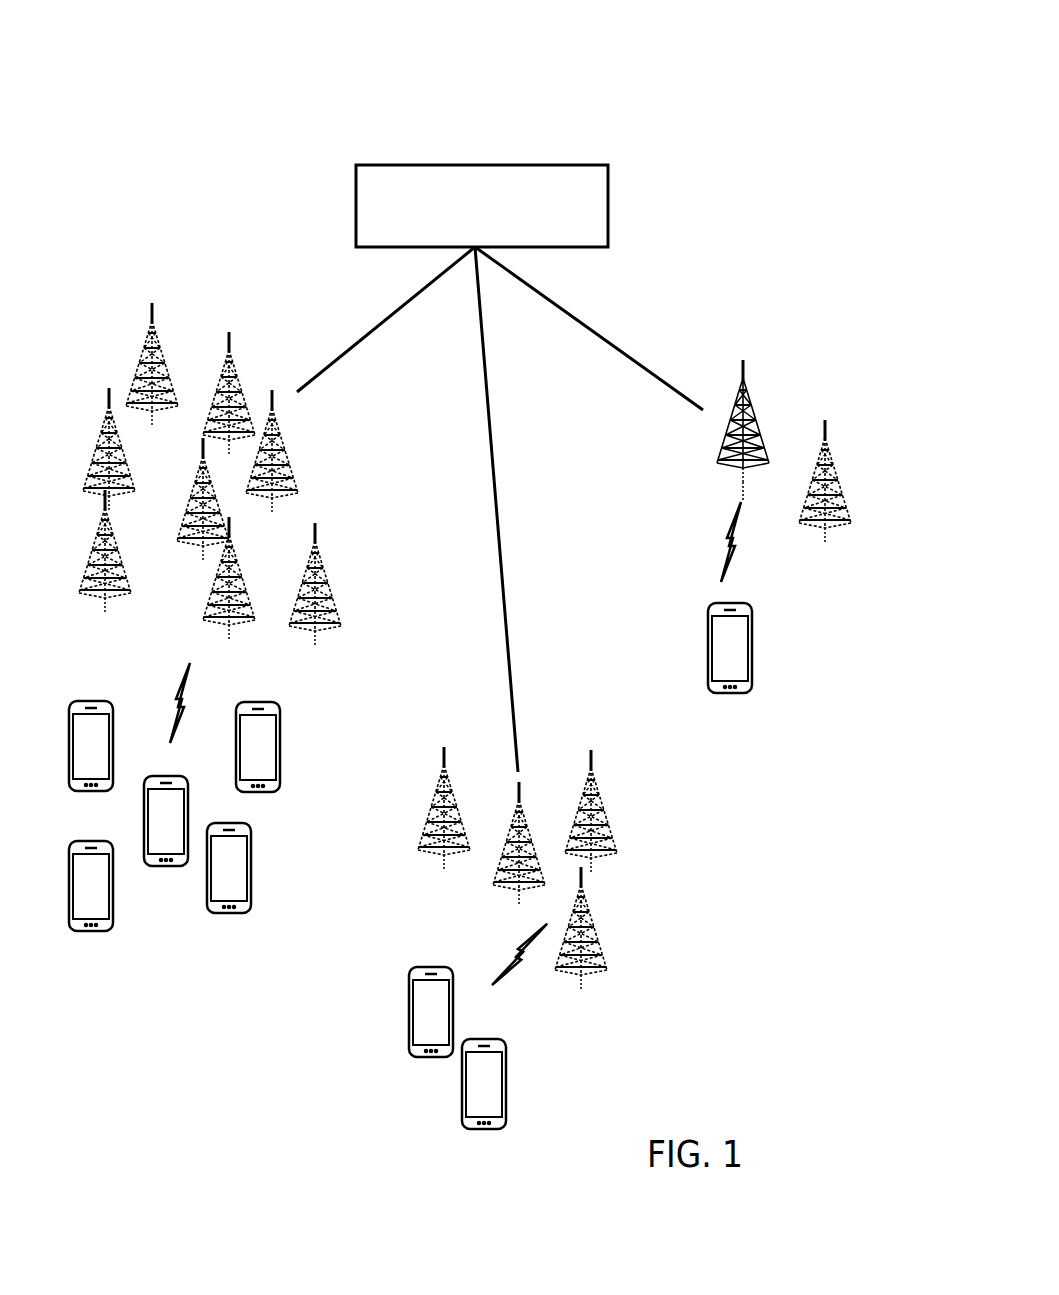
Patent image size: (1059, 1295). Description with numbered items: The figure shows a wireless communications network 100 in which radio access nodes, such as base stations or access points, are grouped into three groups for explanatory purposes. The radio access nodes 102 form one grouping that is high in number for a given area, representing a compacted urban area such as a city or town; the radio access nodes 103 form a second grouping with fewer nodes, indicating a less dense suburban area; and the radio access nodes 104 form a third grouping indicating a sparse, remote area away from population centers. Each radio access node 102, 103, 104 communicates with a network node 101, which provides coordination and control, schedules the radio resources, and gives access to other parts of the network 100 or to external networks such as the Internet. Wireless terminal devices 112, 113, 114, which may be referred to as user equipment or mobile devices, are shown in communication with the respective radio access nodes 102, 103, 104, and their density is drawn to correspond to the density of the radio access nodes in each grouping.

The network 100 is at (655, 92).
The network node 101 is at (610, 210).
The radio access nodes 102 is at (187, 347).
The radio access nodes 103 is at (562, 787).
The radio access nodes 104 is at (777, 410).
The wireless terminal devices 112 is at (149, 893).
The wireless terminal devices 113 is at (438, 1077).
The wireless terminal device 114 is at (752, 630).